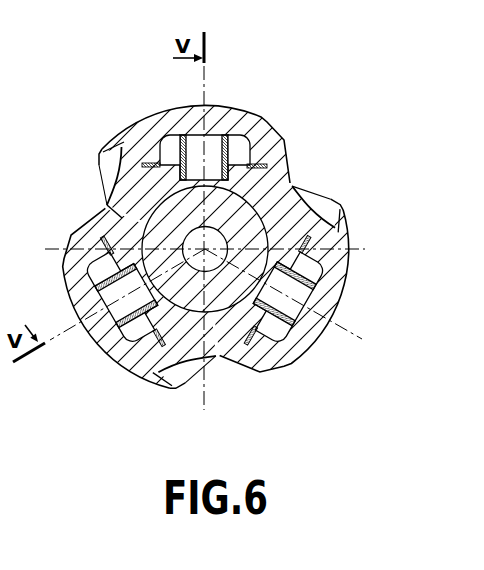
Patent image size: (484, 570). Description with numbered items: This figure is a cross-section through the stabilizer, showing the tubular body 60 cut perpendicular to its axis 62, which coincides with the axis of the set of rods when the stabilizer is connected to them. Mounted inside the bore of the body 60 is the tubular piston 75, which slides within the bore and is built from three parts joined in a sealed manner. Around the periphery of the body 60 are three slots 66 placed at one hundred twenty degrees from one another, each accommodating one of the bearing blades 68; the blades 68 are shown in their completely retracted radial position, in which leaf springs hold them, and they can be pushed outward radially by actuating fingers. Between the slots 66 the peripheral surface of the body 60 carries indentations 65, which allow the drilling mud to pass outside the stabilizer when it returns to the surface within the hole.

The body 60 is at (107, 205).
The axis 62 is at (212, 266).
The indentations 65 is at (303, 200).
The slots 66 is at (228, 157).
The bearing blades 68 is at (215, 117).
The tubular piston 75 is at (170, 205).